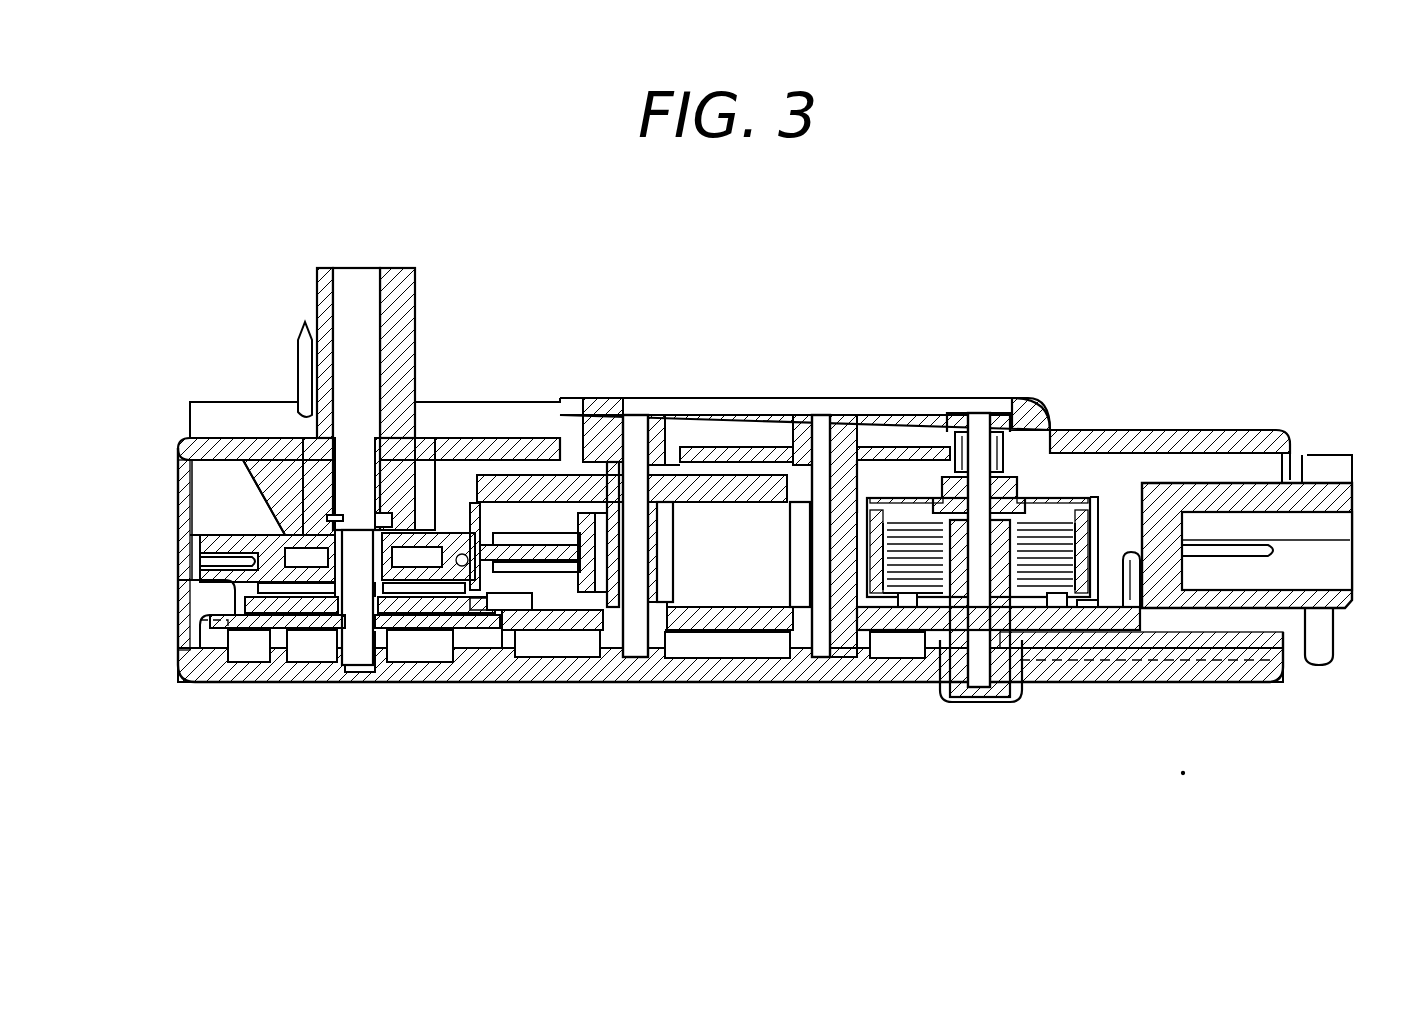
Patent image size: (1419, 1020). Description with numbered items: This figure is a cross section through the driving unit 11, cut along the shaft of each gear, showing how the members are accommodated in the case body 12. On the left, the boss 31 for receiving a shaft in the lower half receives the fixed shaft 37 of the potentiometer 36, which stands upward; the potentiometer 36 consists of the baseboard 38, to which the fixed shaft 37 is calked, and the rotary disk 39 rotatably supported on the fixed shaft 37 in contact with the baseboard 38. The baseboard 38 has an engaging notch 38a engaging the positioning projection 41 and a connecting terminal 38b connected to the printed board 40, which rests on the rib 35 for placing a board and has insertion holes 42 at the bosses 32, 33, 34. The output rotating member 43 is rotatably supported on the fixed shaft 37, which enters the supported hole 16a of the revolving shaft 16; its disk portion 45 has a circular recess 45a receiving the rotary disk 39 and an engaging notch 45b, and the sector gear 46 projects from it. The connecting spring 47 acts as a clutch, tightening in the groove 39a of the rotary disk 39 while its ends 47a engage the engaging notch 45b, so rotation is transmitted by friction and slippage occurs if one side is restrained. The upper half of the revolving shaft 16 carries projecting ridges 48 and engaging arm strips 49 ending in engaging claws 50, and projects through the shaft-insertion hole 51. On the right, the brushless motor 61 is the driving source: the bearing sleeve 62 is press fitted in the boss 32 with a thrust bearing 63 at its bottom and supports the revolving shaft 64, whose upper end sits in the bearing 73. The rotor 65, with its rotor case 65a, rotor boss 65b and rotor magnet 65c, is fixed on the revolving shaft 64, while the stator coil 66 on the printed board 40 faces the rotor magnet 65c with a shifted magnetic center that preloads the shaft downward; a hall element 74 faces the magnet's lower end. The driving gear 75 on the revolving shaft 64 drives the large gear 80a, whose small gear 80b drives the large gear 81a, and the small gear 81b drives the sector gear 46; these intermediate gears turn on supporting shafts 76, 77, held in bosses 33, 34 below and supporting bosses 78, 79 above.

The driving unit 11 is at (1006, 242).
The case body 12 is at (1230, 433).
The revolving shaft 16 is at (358, 430).
The supported hole 16a is at (320, 425).
The boss for receiving a shaft 31 is at (325, 660).
The boss for receiving a shaft 32 is at (918, 650).
The boss for receiving a shaft 33 is at (745, 625).
The boss for receiving a shaft 34 is at (578, 640).
The rib for placing a board 35 is at (525, 612).
The potentiometer 36 is at (500, 640).
The fixed shaft 37 is at (345, 450).
The baseboard 38 is at (420, 640).
The engaging notch 38a is at (205, 650).
The connecting terminal 38b is at (560, 625).
The rotary disk 39 is at (270, 500).
The groove 39a is at (455, 475).
The printed board 40 is at (700, 625).
The positioning projection 41 is at (215, 630).
The insertion hole 42 is at (805, 560).
The output rotating member 43 is at (540, 540).
The disk portion 45 is at (215, 522).
The circular recess 45a is at (385, 640).
The engaging notch 45b is at (250, 590).
The sector gear 46 is at (635, 480).
The connecting spring 47 is at (255, 635).
The ends 47a is at (235, 575).
The projecting ridges 48 is at (412, 302).
The engaging arm strip 49 is at (298, 370).
The engaging claw 50 is at (303, 330).
The shaft-insertion hole 51 is at (400, 440).
The brushless motor 61 is at (1082, 500).
The bearing sleeve 62 is at (1080, 660).
The thrust bearing 63 is at (988, 700).
The revolving shaft 64 is at (975, 700).
The rotor 65 is at (890, 520).
The rotor case 65a is at (920, 500).
The rotor boss 65b is at (1085, 520).
The rotor magnet 65c is at (870, 612).
The stator coil 66 is at (1120, 520).
The bearing 73 is at (955, 480).
The hall element 74 is at (1310, 540).
The driving gear 75 is at (1010, 470).
The supporting shaft 76 is at (720, 635).
The supporting shaft 77 is at (640, 545).
The supporting boss 78 is at (790, 455).
The supporting boss 79 is at (660, 470).
The large gear 80a is at (760, 445).
The small gear 80b is at (800, 560).
The large gear 81a is at (735, 458).
The small gear 81b is at (660, 640).